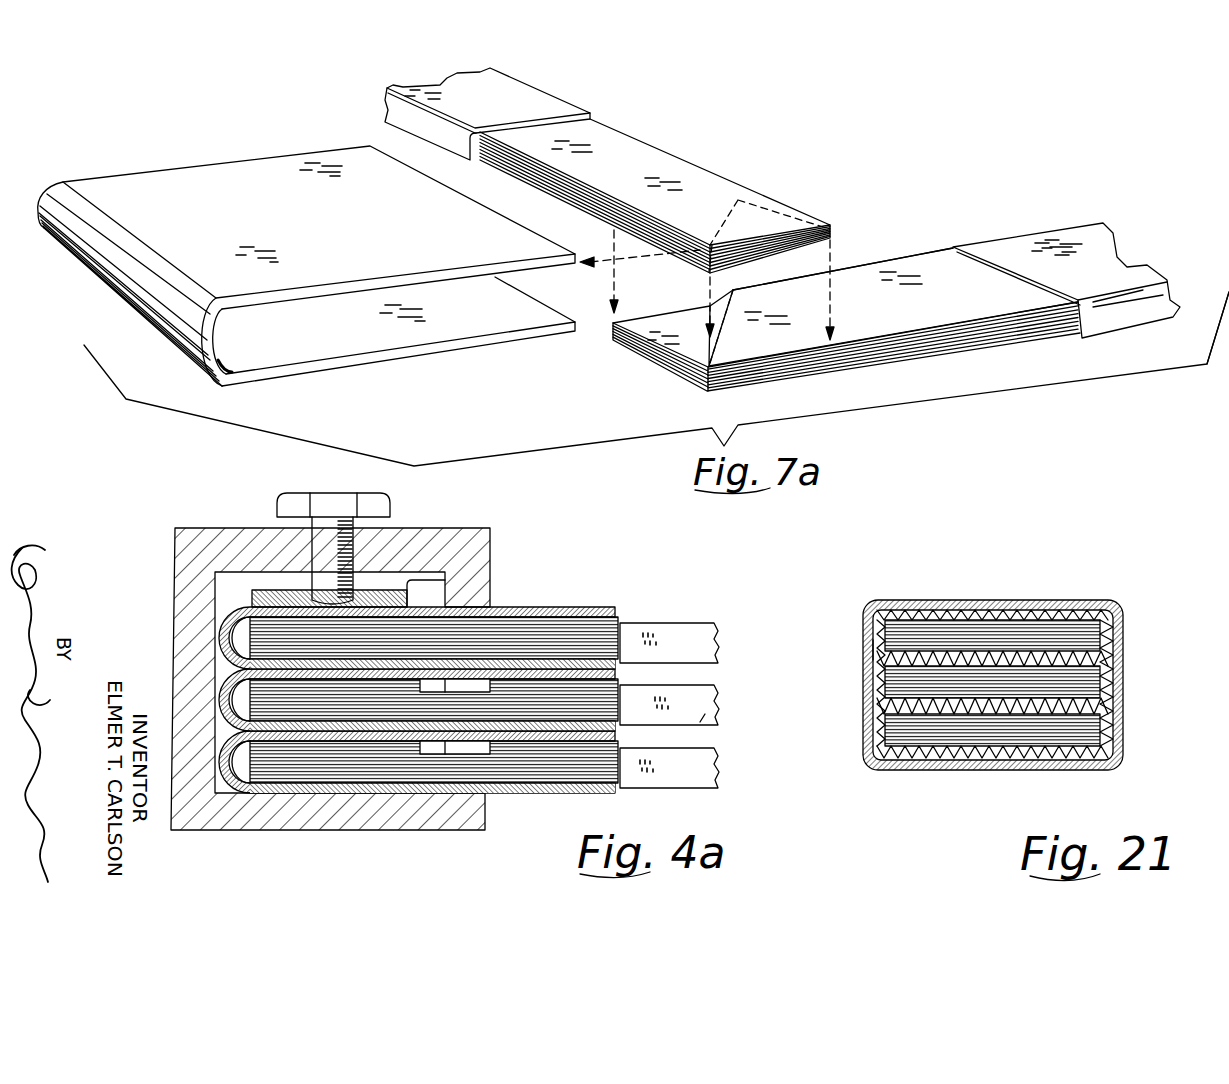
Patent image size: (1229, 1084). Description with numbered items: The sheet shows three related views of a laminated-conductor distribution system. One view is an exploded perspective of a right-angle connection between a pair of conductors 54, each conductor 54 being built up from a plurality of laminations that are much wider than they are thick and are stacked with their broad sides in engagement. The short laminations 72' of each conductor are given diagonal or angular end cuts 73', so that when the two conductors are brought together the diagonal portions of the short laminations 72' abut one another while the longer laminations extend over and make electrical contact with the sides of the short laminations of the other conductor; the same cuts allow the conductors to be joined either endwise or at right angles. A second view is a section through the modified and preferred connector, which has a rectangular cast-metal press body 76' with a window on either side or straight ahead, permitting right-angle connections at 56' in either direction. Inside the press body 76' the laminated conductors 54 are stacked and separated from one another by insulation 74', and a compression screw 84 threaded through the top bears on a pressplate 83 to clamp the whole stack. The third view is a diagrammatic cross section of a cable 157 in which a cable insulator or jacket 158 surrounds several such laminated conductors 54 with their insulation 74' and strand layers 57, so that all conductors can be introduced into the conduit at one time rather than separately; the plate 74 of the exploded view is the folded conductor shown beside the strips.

In FIG. 7A, the folded conductor plate 74 is at (306, 266).
In FIG. 7A, the wires or conductors 54 is at (663, 158).
In FIG. 4A, the wires or conductors 54 is at (607, 632).
In FIG. 21, the wires or conductors 54 is at (1103, 702).
In FIG. 7A, the short laminations 72' is at (893, 297).
In FIG. 7A, the diagonal or angular end cuts 73' is at (786, 264).
In FIG. 4A, the press body 76' is at (367, 679).
In FIG. 4A, the pressplate 83 is at (415, 586).
In FIG. 4A, the compression screw 84 is at (278, 500).
In FIG. 4A, the insulation 74' is at (435, 681).
In FIG. 4A, the right-angle connections 56' is at (491, 662).
In FIG. 4A, the strand / wrapping layer 57 is at (706, 714).
In FIG. 21, the strand / wrapping layer 57 is at (980, 610).
In FIG. 21, the cable insulator or jacket 158 is at (1050, 600).
In FIG. 21, the cable 157 is at (1126, 651).